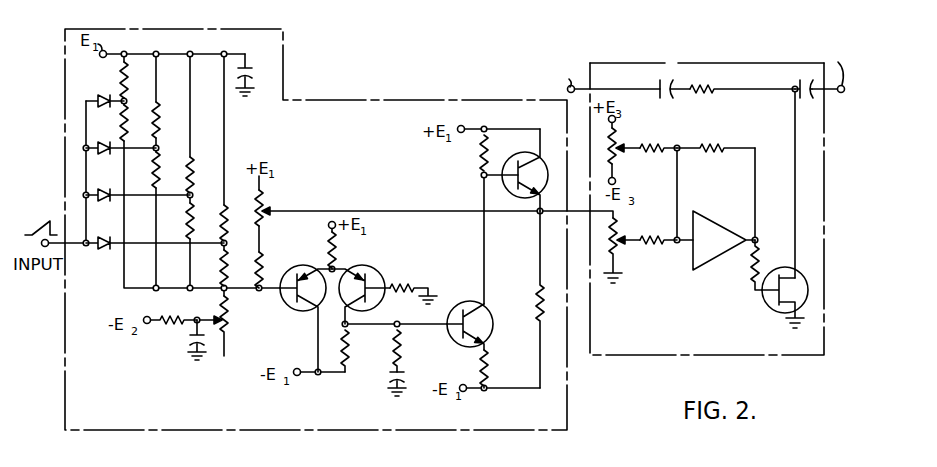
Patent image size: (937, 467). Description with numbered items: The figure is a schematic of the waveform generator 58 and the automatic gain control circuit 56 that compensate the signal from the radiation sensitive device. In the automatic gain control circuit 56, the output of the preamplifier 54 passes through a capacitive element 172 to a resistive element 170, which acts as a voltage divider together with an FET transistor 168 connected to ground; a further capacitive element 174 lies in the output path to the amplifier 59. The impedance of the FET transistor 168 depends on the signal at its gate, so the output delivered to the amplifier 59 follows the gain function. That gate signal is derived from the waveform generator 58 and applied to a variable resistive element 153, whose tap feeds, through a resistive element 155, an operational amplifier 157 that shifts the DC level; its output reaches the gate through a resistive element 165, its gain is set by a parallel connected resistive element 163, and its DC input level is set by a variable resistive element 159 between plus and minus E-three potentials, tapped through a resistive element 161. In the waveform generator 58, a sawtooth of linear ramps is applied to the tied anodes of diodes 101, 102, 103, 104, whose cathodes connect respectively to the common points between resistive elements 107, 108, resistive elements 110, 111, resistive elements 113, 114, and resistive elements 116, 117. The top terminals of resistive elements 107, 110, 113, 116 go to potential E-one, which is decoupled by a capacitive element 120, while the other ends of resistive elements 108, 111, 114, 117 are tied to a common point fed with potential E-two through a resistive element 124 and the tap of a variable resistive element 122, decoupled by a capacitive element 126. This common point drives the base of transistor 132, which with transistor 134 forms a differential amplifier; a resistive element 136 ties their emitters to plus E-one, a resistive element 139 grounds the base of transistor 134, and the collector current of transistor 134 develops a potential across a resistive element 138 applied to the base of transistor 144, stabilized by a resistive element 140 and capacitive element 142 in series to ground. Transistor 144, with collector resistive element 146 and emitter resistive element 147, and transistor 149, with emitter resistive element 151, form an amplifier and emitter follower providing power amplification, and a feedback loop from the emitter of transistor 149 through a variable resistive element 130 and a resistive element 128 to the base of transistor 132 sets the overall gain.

The preamplifier 54 is at (457, 74).
The automatic gain control circuit 56 is at (655, 63).
The waveform generator 58 is at (65, 53).
The amplifier 59 is at (762, 64).
The diode 101 is at (103, 95).
The diode 102 is at (105, 134).
The diode 103 is at (105, 182).
The diode 104 is at (105, 230).
The resistive element 107 is at (120, 68).
The resistive element 108 is at (126, 114).
The resistive element 110 is at (157, 124).
The resistive element 111 is at (157, 170).
The resistive element 113 is at (192, 170).
The resistive element 114 is at (192, 210).
The resistive element 116 is at (226, 208).
The resistive element 117 is at (227, 260).
The capacitive element 120 is at (246, 67).
The variable resistive element 122 is at (228, 335).
The resistive element 124 is at (173, 316).
The capacitive element 126 is at (188, 344).
The resistive element 128 is at (264, 262).
The variable resistive element 130 is at (272, 188).
The transistor 132 is at (305, 314).
The transistor 134 is at (369, 267).
The resistive element 136 is at (337, 249).
The resistive element 138 is at (348, 352).
The resistive element 139 is at (402, 286).
The resistive element 140 is at (400, 352).
The capacitive element 142 is at (386, 381).
The transistor 144 is at (474, 301).
The resistive element 146 is at (478, 154).
The resistive element 147 is at (486, 370).
The transistor 149 is at (527, 154).
The resistive element 151 is at (537, 297).
The variable resistive element 153 is at (620, 237).
The resistive element 155 is at (646, 245).
The operational amplifier 157 is at (713, 222).
The variable resistive element 159 is at (617, 145).
The resistive element 161 is at (656, 146).
The resistive element 163 is at (719, 146).
The resistive element 165 is at (752, 278).
The FET transistor 168 is at (773, 309).
The resistive element 170 is at (711, 86).
The capacitive element 172 is at (671, 98).
The capacitor 174 is at (803, 83).